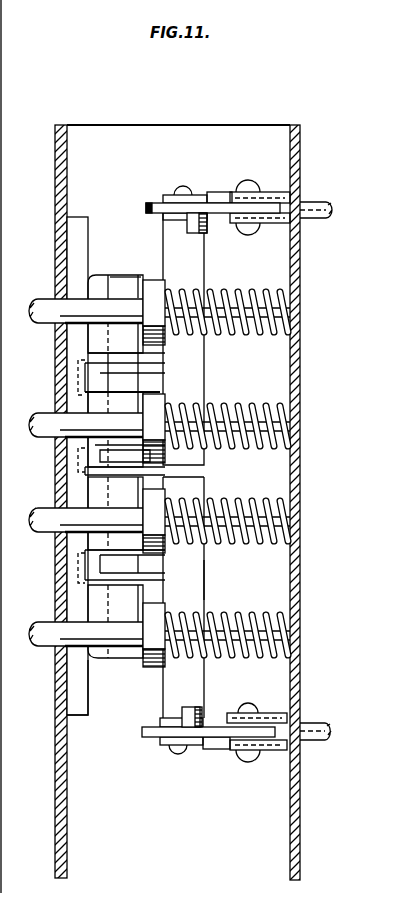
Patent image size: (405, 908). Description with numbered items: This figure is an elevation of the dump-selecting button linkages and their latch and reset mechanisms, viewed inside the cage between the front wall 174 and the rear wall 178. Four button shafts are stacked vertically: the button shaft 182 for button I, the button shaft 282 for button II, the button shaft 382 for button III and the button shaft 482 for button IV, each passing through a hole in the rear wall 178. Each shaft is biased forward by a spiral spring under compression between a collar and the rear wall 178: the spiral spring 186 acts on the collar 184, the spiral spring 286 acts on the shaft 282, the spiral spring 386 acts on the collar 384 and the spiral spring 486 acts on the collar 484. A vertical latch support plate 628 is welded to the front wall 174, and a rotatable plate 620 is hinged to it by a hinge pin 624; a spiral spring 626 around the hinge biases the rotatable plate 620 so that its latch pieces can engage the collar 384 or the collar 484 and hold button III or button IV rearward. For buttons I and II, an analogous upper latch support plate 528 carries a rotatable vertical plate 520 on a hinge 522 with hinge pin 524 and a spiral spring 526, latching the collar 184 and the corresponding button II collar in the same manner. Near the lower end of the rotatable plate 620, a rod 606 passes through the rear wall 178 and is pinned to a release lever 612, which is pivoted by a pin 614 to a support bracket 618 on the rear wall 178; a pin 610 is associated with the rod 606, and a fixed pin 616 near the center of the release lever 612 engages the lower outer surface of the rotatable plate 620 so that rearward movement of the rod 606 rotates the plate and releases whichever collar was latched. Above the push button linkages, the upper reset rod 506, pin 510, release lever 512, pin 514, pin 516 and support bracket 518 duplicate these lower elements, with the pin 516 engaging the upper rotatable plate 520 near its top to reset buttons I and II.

The front wall 174 is at (65, 112).
The rear wall 178 is at (296, 125).
The button shaft 182 is at (38, 300).
The collar 184 is at (180, 284).
The spiral spring 186 is at (167, 331).
The button shaft 282 is at (38, 413).
The spiral spring 286 is at (258, 450).
The button shaft 382 is at (37, 507).
The collar 384 is at (166, 400).
The spiral spring 386 is at (248, 540).
The button shaft 482 is at (37, 622).
The collar 484 is at (166, 611).
The spiral spring 486 is at (256, 652).
The rod 506 is at (212, 194).
The pin 510 is at (183, 186).
The release lever 512 is at (154, 203).
The pin 514 is at (248, 181).
The pin 516 is at (207, 233).
The support bracket 518 is at (275, 193).
The rotatable vertical plate 520 is at (207, 262).
The hinge 522 is at (97, 287).
The hinge pin 524 is at (124, 294).
The spiral spring 526 is at (142, 384).
The latch support plate 528 is at (78, 217).
The rod 606 is at (212, 746).
The pin 610 is at (178, 750).
The release lever 612 is at (152, 740).
The pin 614 is at (245, 754).
The pin 616 is at (205, 718).
The support bracket 618 is at (268, 750).
The rotatable plate 620 is at (205, 578).
The hinge pin 624 is at (141, 666).
The spiral spring 626 is at (142, 566).
The latch support plate 628 is at (78, 718).